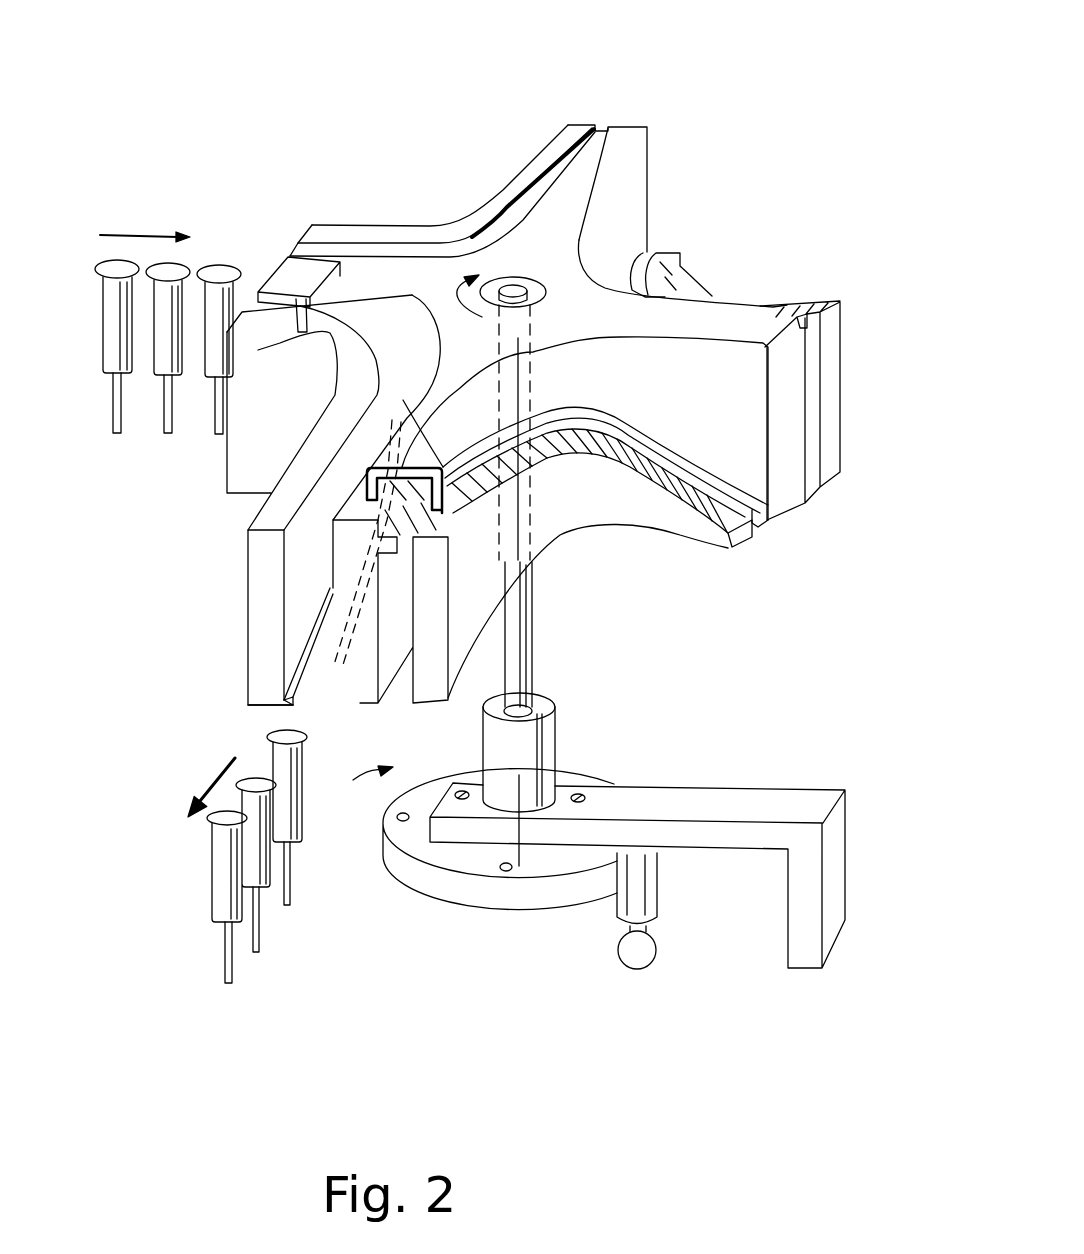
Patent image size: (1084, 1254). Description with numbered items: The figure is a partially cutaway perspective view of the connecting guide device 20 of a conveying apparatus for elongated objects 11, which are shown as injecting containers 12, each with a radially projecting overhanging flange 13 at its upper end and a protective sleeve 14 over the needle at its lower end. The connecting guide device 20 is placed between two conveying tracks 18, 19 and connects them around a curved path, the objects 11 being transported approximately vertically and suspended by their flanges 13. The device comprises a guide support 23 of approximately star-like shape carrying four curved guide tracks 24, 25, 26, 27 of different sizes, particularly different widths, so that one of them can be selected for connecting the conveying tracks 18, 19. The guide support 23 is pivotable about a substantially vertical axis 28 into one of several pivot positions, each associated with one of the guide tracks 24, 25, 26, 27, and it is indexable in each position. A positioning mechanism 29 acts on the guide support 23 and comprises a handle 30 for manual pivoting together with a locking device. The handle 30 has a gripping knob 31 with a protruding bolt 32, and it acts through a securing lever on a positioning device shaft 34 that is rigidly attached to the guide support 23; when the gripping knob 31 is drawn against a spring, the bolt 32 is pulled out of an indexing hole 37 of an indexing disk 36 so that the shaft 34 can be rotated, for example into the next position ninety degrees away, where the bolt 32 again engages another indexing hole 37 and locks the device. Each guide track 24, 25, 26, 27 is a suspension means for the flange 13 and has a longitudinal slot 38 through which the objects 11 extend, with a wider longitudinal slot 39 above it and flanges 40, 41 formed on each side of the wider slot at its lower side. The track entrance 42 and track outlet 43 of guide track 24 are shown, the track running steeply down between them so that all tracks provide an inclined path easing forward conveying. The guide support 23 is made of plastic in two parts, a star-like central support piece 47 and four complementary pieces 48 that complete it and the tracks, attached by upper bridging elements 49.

The elongated objects 11 is at (213, 572).
The injecting container 12 is at (172, 352).
The flange 13 is at (233, 273).
The protective sleeve 14 is at (215, 430).
The conveying track 18 is at (160, 218).
The conveying track 19 is at (190, 870).
The connecting guide device 20 is at (700, 190).
The guide support 23 is at (600, 325).
The guide track 24 is at (295, 612).
The guide track 25 is at (704, 505).
The guide track 26 is at (665, 242).
The guide track 27 is at (343, 252).
The vertical axis 28 is at (513, 287).
The positioning mechanism 29 is at (692, 900).
The handle 30 is at (662, 900).
The gripping knob 31 is at (645, 952).
The bolt 32 is at (627, 928).
The positioning device shaft 34 is at (525, 660).
The indexing disk 36 is at (420, 873).
The indexing hole 37 is at (506, 871).
The longitudinal slot 38 is at (361, 784).
The wider longitudinal slot 39 is at (297, 638).
The flange of the guide support 40 is at (285, 700).
The flange of the guide support 41 is at (316, 703).
The track entrance 42 is at (263, 295).
The track outlet 43 is at (302, 703).
The central support piece 47 is at (553, 230).
The complementary pieces 48 is at (555, 155).
The upper bridging elements 49 is at (350, 330).